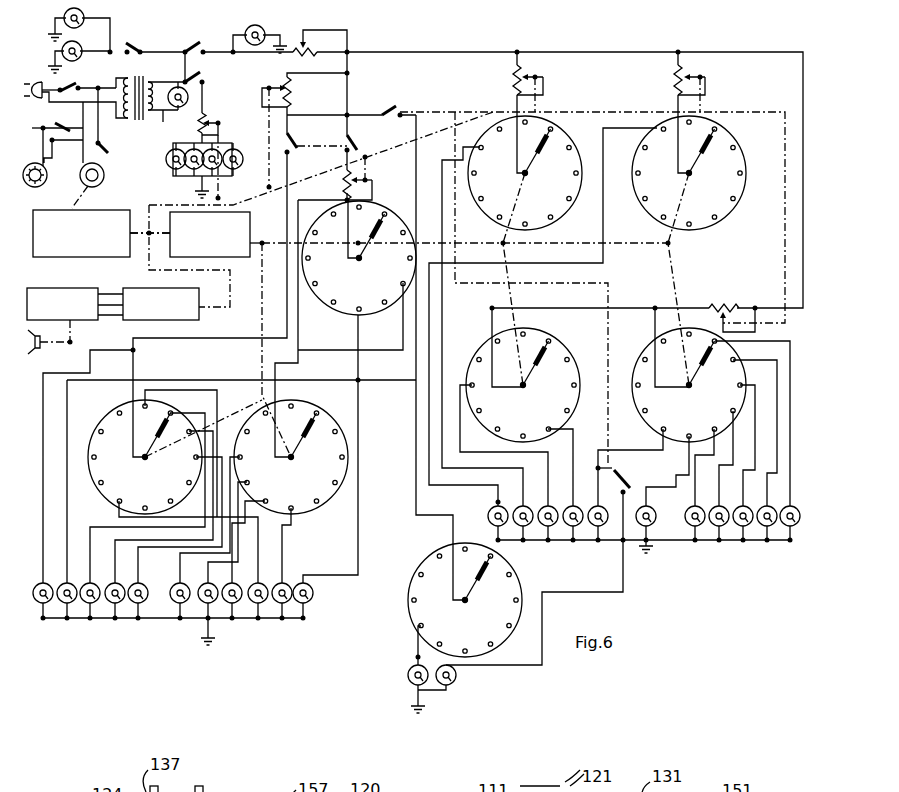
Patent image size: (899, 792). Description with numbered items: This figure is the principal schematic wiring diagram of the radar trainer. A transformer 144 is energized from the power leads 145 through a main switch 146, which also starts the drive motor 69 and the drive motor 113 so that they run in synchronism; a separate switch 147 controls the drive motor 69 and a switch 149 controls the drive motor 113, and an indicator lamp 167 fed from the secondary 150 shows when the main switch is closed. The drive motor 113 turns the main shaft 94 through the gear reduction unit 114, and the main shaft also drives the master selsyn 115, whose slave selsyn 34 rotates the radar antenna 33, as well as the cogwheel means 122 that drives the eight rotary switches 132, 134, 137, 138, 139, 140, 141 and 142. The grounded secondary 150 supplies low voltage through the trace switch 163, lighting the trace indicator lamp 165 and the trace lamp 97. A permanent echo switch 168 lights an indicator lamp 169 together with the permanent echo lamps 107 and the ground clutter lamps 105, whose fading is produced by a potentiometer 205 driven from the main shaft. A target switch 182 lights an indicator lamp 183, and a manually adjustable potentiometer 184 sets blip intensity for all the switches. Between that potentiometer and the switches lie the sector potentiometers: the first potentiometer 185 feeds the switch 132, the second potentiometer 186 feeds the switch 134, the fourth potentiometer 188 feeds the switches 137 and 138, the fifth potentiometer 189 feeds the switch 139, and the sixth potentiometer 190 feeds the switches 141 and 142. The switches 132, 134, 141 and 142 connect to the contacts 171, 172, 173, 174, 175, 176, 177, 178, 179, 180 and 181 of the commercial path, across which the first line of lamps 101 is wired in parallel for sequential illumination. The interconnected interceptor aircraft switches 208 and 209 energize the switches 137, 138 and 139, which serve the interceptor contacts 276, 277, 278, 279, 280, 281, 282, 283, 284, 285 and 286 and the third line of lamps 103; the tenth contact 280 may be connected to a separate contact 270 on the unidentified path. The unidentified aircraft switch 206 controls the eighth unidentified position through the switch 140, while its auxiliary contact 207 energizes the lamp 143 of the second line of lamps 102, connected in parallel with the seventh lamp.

The trace indicator lamp 165 is at (84, 14).
The trace lamp 97 is at (64, 49).
The indicator lamp 183 is at (257, 27).
The trace switch 163 is at (133, 46).
The target switch 182 is at (192, 44).
The manually adjustable potentiometer 184 is at (308, 34).
The permanent echo switch 168 is at (202, 74).
The transformer 144 is at (148, 82).
The secondary 150 is at (128, 118).
The indicator lamp 167 is at (178, 105).
The potentiometer 205 is at (208, 116).
The indicator lamp 169 is at (257, 133).
The lamps 105 is at (218, 176).
The lamps 107 is at (170, 170).
The power leads 145 is at (46, 74).
The main switch 146 is at (66, 82).
The switch 149 is at (108, 148).
The switch 147 is at (64, 124).
The drive motor 69 is at (46, 178).
The drive motor 113 is at (104, 174).
The gear reduction unit 114 is at (124, 202).
The cogwheel means 122 is at (250, 220).
The main shaft 94 is at (140, 240).
The slave selsyn 34 is at (52, 288).
The master selsyn 115 is at (199, 316).
The radar antenna 33 is at (38, 350).
The fifth potentiometer 189 is at (294, 98).
The interceptor aircraft switch 208 is at (292, 132).
The interceptor aircraft switch 209 is at (356, 146).
The fourth potentiometer 188 is at (342, 180).
The unidentified aircraft switch 206 is at (386, 112).
The first potentiometer 185 is at (514, 80).
The second potentiometer 186 is at (674, 80).
The sixth potentiometer 190 is at (712, 300).
The auxiliary contact 207 is at (630, 478).
The switch 132 is at (511, 205).
The switch 134 is at (675, 205).
The seventh switch 137 is at (345, 290).
The twelfth switch 142 is at (509, 417).
The eleventh switch 141 is at (675, 417).
The ninth switch 139 is at (131, 489).
The eighth switch 138 is at (277, 489).
The tenth switch 140 is at (451, 632).
The first line of lamps 101 is at (598, 542).
The contact 181 is at (498, 502).
The contact 180 is at (523, 502).
The contact 179 is at (548, 502).
The contact 178 is at (573, 502).
The contact 177 is at (598, 502).
The contact 176 is at (646, 506).
The contact 175 is at (695, 526).
The contact 174 is at (719, 540).
The contact 173 is at (743, 540).
The contact 172 is at (767, 540).
The contact 171 is at (790, 540).
The third line of lamps 103 is at (262, 618).
The separate contact 270 is at (214, 636).
The contact 286 is at (34, 590).
The contact 285 is at (56, 592).
The contact 284 is at (80, 590).
The contact 283 is at (104, 592).
The contact 282 is at (128, 592).
The contact 281 is at (180, 583).
The tenth contact 280 is at (202, 598).
The contact 279 is at (244, 604).
The contact 278 is at (262, 580).
The contact 277 is at (284, 582).
The sixth contact 276 is at (312, 586).
The second line of lamps 102 is at (410, 670).
The lamp 143 is at (456, 680).